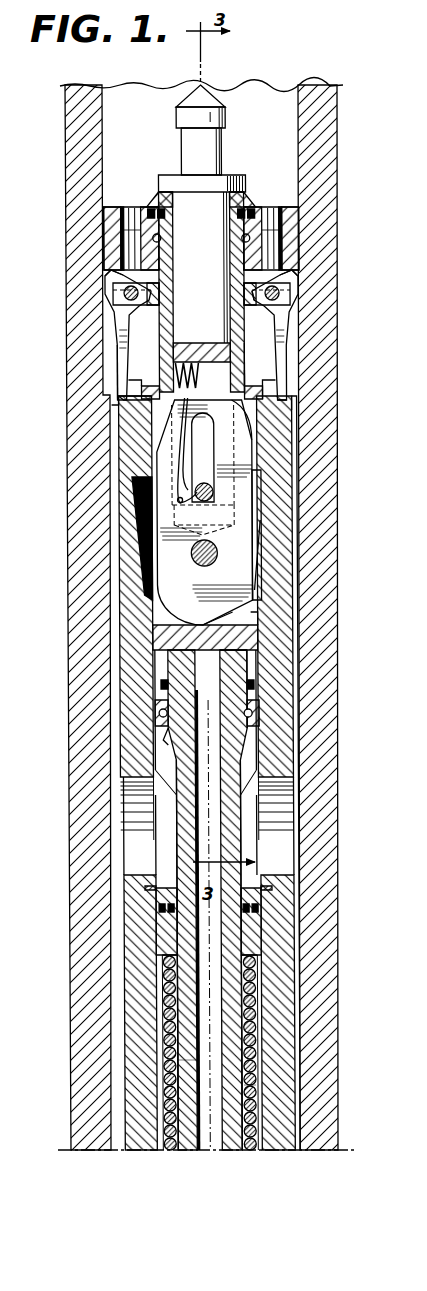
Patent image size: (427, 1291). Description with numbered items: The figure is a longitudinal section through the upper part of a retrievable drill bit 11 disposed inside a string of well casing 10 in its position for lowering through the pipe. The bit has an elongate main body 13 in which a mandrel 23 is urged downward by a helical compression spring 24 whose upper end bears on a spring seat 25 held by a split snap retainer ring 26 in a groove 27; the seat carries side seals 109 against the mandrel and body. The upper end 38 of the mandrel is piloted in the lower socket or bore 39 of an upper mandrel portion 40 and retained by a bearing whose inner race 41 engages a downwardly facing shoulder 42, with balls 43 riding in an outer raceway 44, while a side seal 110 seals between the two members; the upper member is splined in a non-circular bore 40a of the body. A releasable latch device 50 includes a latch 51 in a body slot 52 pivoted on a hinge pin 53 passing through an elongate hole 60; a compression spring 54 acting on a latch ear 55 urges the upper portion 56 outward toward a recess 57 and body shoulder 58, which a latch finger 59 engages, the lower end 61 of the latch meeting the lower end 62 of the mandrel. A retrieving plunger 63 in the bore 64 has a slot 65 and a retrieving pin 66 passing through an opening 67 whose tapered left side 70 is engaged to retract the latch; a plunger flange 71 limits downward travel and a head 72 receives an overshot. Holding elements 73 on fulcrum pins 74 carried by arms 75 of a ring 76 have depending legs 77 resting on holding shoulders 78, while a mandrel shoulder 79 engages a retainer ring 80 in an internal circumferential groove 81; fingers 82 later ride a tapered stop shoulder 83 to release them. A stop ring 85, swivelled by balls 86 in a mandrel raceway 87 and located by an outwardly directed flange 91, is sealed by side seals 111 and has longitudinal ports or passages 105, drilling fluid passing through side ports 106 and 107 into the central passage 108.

The well casing 10 is at (223, 613).
The drill bit 11 is at (301, 752).
The main body 13 is at (288, 770).
The mandrel 23 is at (178, 1065).
The helical compression spring 24 is at (247, 1086).
The spring seat 25 is at (250, 936).
The split snap retainer ring 26 is at (268, 880).
The groove 27 is at (252, 891).
The upper end of the mandrel 38 is at (237, 678).
The lower socket or bore 39 is at (236, 660).
The upper mandrel portion 40 is at (162, 636).
The non-circular bore 40a is at (162, 746).
The inner race 41 is at (253, 706).
The downwardly facing shoulder 42 is at (252, 690).
The balls 43 is at (249, 714).
The outer raceway 44 is at (156, 712).
The releasable latch device 50 is at (257, 444).
The latch 51 is at (240, 552).
The body slot 52 is at (150, 574).
The hinge pin 53 is at (215, 555).
The helical compression spring 54 is at (173, 367).
The latch ear 55 is at (260, 367).
The upper portion of the latch 56 is at (241, 465).
The recess 57 is at (262, 512).
The body shoulder 58 is at (262, 482).
The latch finger 59 is at (293, 400).
The hole 60 is at (160, 540).
The lower end of the latch 61 is at (236, 620).
The lower end of the mandrel 62 is at (250, 635).
The retrieving plunger 63 is at (208, 297).
The bore 64 is at (276, 299).
The slot 65 is at (262, 373).
The retrieving pin 66 is at (195, 491).
The opening 67 is at (176, 507).
The left side of the latch opening 70 is at (183, 462).
The plunger flange 71 is at (238, 182).
The head 72 is at (224, 118).
The holding elements 73 is at (298, 322).
The hinge or fulcrum pin 74 is at (126, 293).
The arms 75 is at (118, 302).
The ring 76 is at (112, 330).
The depending legs 77 is at (233, 383).
The holding shoulders 78 is at (150, 404).
The mandrel shoulder 79 is at (140, 420).
The retainer ring 80 is at (140, 397).
The internal circumferential groove 81 is at (284, 392).
The fingers 82 is at (106, 278).
The tapered stop shoulder 83 is at (118, 372).
The stop ring 85 is at (108, 214).
The balls 86 is at (104, 240).
The mandrel raceway 87 is at (160, 239).
The outwardly directed flange 91 is at (250, 200).
The longitudinal ports or passages 105 is at (282, 240).
The side ports 106 is at (282, 836).
The side ports 107 is at (175, 818).
The central passage 108 is at (218, 995).
The side seals 109 is at (160, 914).
The side seal 110 is at (158, 686).
The side seals 111 is at (146, 212).